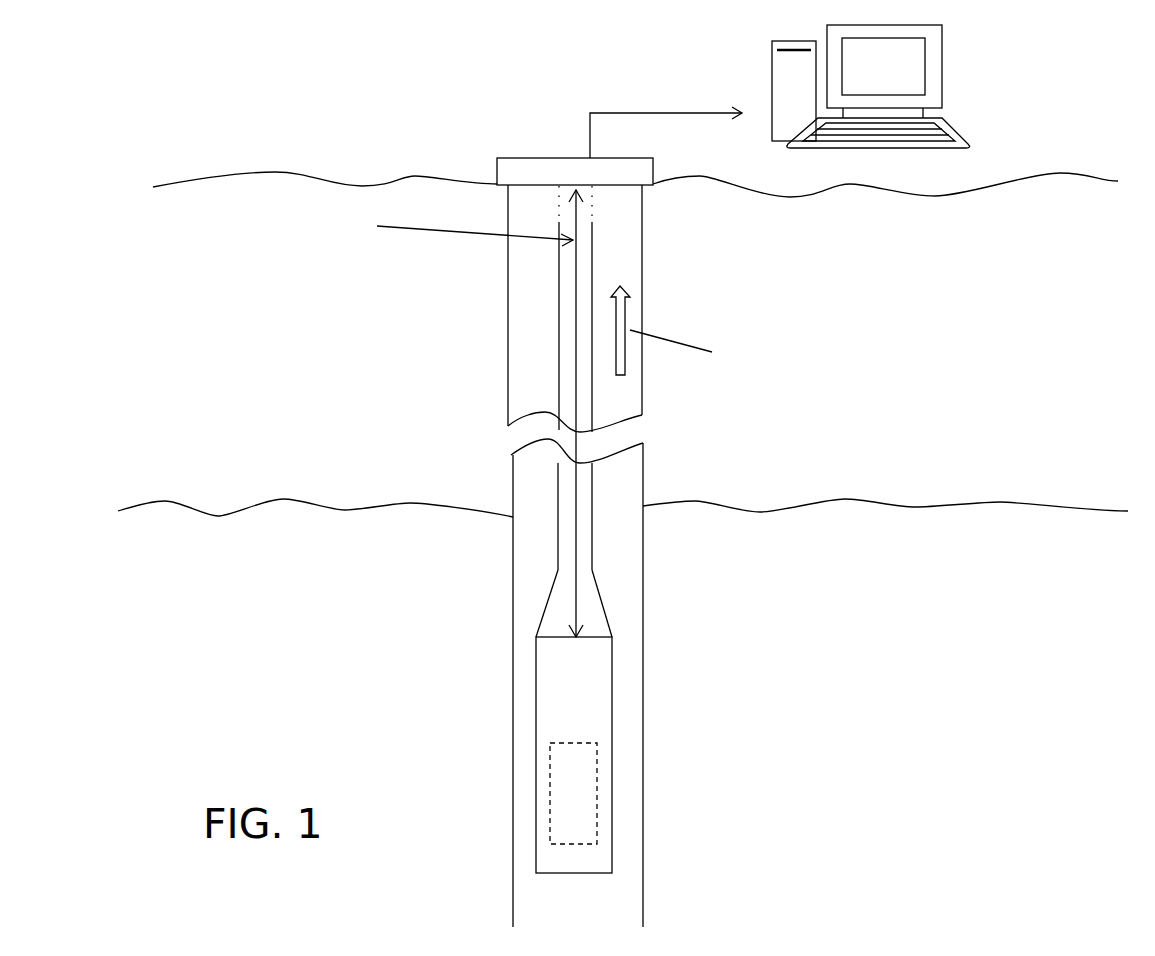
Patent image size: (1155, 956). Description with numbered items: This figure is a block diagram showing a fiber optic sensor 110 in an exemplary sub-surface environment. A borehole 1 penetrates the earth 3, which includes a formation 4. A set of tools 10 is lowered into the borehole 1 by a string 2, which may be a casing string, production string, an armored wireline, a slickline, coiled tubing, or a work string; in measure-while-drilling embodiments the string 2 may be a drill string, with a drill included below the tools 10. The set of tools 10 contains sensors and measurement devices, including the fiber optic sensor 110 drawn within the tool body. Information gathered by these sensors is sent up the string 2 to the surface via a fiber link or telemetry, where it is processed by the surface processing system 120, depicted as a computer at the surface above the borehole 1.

The borehole casing 1 is at (622, 228).
The drill pipe 2 is at (559, 307).
The earth surface 3 is at (980, 294).
The formation 4 is at (1008, 609).
The downhole tool 10 is at (612, 706).
The sensor module 110 is at (598, 772).
The surface computer 120 is at (913, 77).